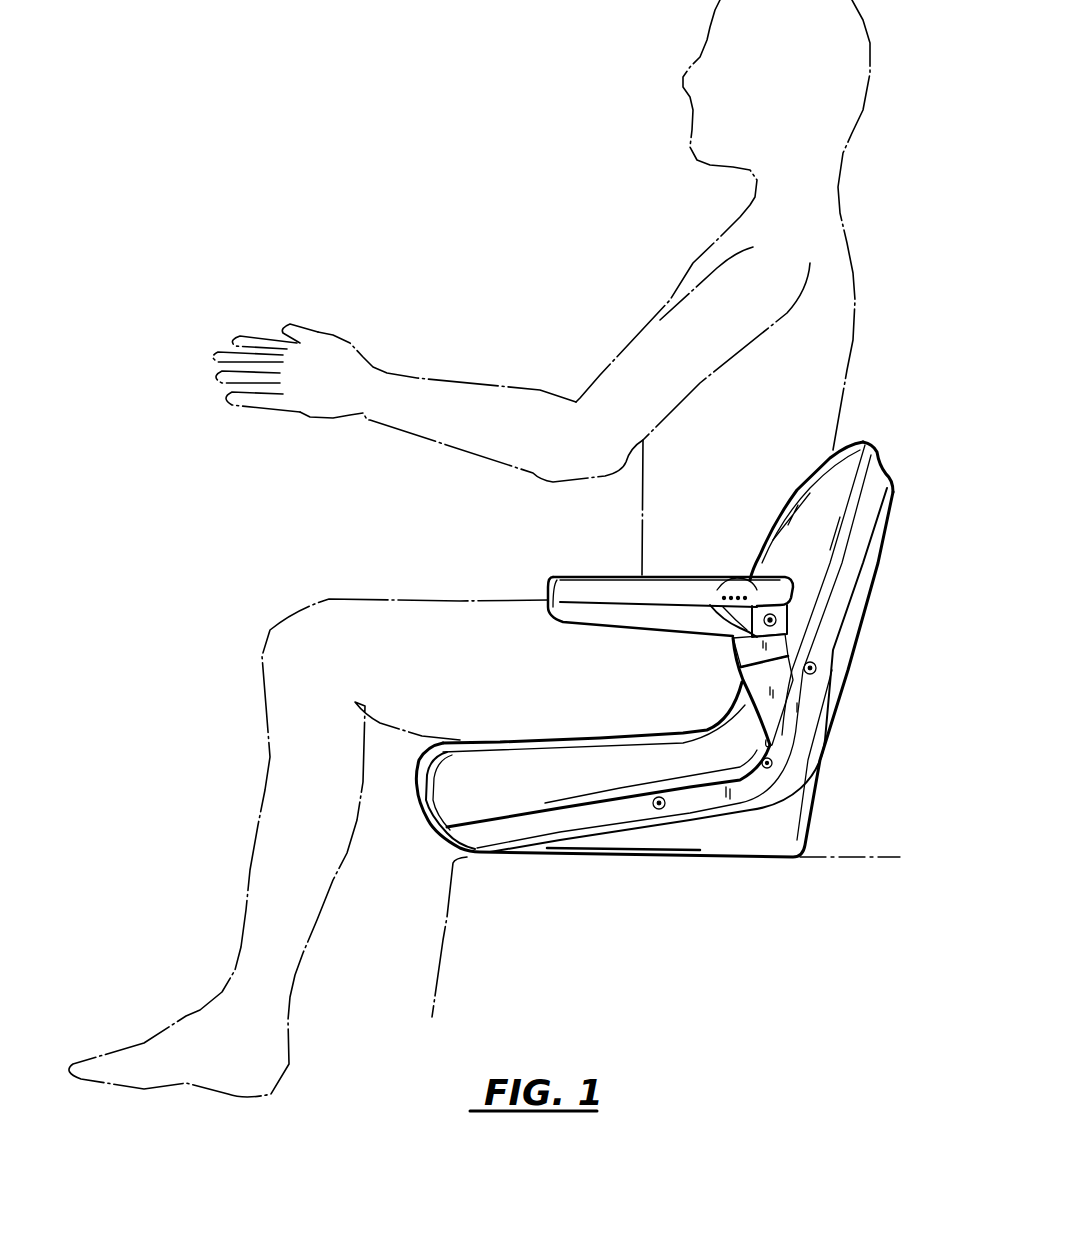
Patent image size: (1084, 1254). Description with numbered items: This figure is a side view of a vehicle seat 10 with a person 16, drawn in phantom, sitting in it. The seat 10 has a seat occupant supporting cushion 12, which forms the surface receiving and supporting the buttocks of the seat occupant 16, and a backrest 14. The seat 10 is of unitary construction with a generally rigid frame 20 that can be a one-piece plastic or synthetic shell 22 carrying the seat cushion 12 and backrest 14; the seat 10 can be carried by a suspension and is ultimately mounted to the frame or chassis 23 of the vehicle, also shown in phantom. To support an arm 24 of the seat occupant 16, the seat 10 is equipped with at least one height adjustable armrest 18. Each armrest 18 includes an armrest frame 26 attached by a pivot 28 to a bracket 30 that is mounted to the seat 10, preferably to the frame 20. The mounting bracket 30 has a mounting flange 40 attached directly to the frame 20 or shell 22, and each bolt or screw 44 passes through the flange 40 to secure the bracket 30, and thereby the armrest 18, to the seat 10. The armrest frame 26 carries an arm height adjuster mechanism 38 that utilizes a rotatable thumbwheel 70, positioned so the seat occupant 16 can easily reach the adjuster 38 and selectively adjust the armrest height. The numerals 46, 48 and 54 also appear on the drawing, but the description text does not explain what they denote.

The vehicle seat 10 is at (673, 657).
The seat occupant supporting cushion 12 is at (441, 807).
The backrest 14 is at (866, 438).
The person 16 is at (510, 548).
The height adjustable armrest 18 is at (701, 596).
The frame 20 is at (900, 487).
The shell 22 is at (452, 843).
The chassis 23 is at (876, 853).
The arm 24 is at (648, 325).
The armrest frame 26 is at (788, 640).
The pivot 28 is at (800, 608).
The bracket 30 is at (684, 825).
The arm height adjuster mechanism 38 is at (705, 612).
The mounting flange 40 is at (729, 793).
The bolt or screw 44 is at (816, 669).
The link 46 is at (743, 697).
The armrest pivot pin 48 is at (777, 622).
The armrest pad 54 is at (603, 573).
The thumbwheel 70 is at (733, 610).